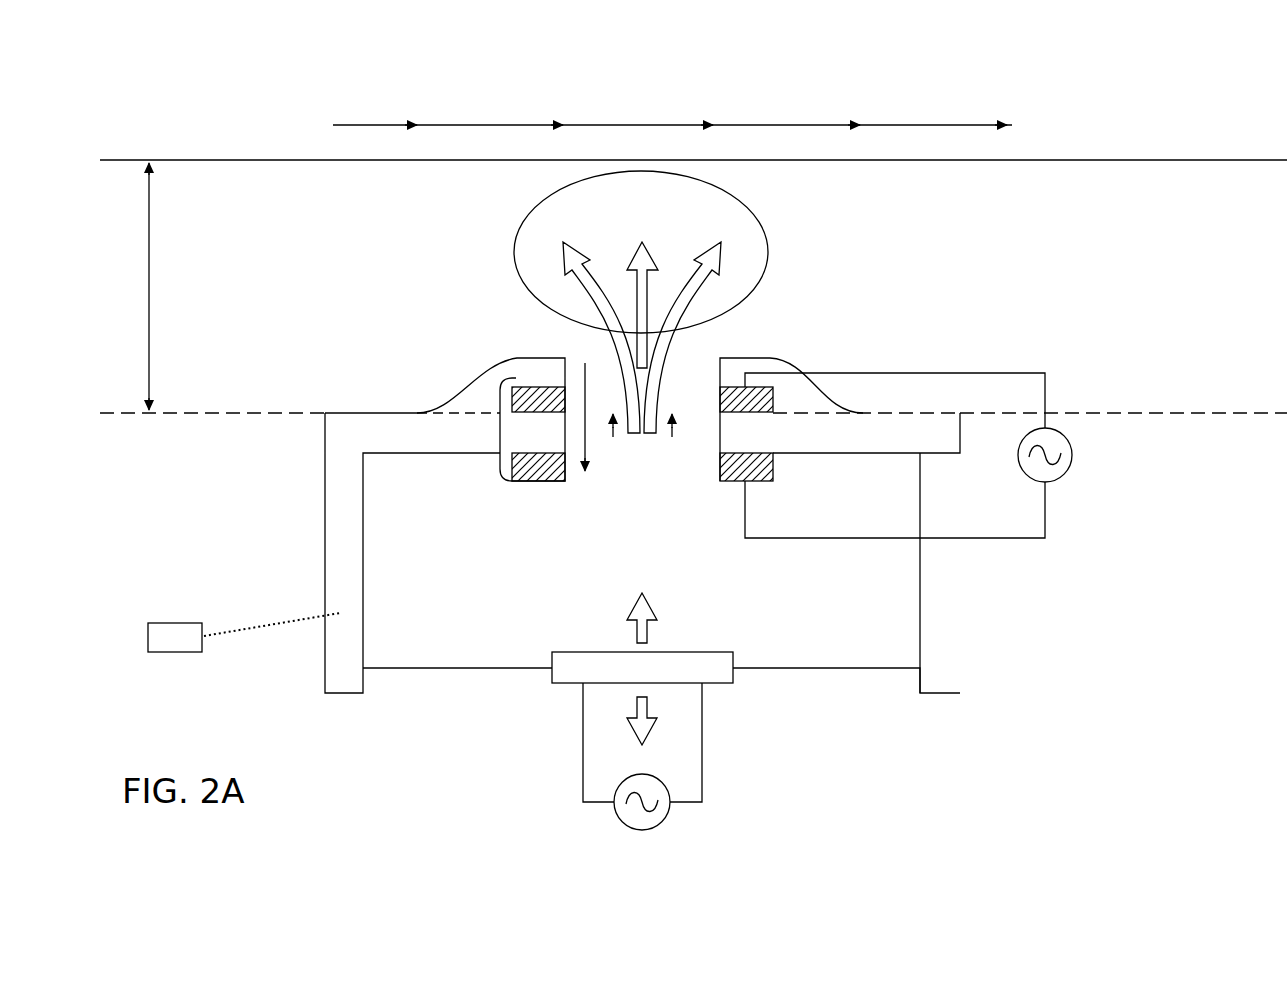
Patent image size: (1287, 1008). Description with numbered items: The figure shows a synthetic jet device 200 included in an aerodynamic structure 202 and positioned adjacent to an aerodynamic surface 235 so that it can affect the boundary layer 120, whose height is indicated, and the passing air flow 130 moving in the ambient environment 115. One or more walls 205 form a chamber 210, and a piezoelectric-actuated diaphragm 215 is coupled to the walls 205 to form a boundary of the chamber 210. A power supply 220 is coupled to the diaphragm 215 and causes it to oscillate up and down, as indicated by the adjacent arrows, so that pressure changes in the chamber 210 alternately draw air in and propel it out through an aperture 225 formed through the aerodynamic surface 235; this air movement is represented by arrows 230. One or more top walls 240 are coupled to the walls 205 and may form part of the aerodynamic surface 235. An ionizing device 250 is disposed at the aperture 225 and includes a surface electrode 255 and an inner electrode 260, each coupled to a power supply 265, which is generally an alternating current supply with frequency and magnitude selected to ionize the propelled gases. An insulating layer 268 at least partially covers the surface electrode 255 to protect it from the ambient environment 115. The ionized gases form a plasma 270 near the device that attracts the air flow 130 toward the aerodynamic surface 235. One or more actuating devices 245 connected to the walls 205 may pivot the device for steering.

The air flow 130 is at (386, 124).
The boundary layer 120 is at (256, 257).
The ambient environment 115 is at (430, 281).
The synthetic jet device 200 is at (1024, 304).
The plasma 270 is at (736, 196).
The aerodynamic surface 235 is at (1195, 420).
The aerodynamic structure 202 is at (218, 450).
The chamber 210 is at (418, 513).
The walls 205 is at (950, 654).
The top walls 240 is at (948, 434).
The power supply 265 is at (1077, 431).
The insulating layer 268 is at (535, 377).
The ionizing device 250 is at (500, 418).
The surface electrode 255 is at (712, 403).
The inner electrode 260 is at (731, 484).
The arrows 230 is at (608, 436).
The aperture 225 is at (661, 471).
The piezoelectric-actuated diaphragm 215 is at (611, 648).
The power supply 220 is at (654, 833).
The actuating devices 245 is at (244, 632).